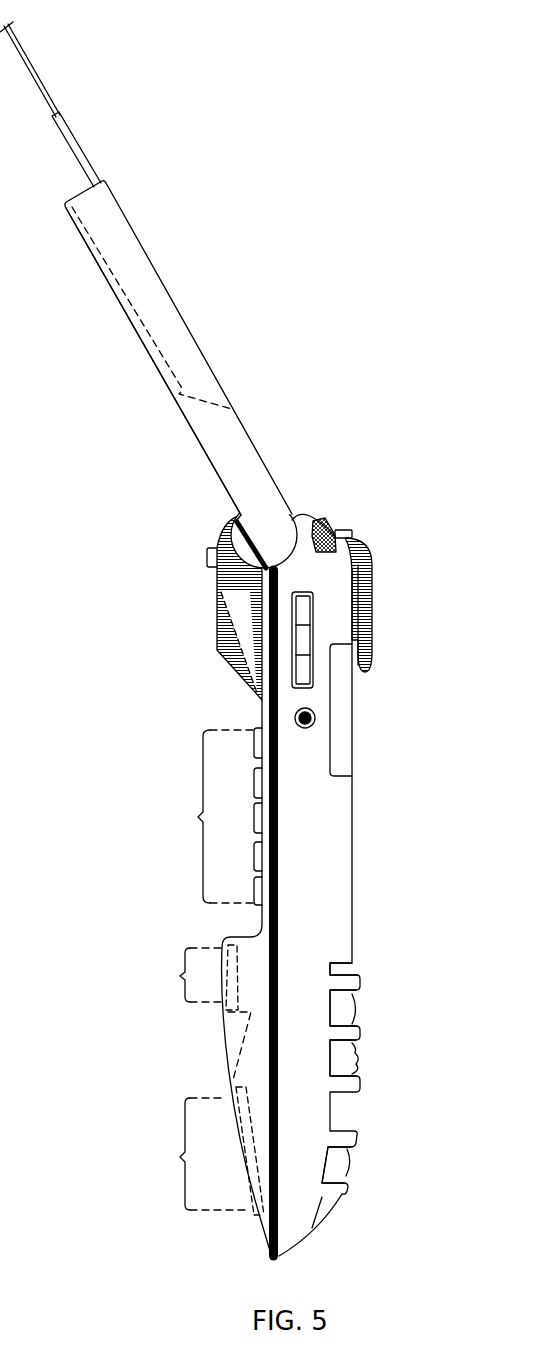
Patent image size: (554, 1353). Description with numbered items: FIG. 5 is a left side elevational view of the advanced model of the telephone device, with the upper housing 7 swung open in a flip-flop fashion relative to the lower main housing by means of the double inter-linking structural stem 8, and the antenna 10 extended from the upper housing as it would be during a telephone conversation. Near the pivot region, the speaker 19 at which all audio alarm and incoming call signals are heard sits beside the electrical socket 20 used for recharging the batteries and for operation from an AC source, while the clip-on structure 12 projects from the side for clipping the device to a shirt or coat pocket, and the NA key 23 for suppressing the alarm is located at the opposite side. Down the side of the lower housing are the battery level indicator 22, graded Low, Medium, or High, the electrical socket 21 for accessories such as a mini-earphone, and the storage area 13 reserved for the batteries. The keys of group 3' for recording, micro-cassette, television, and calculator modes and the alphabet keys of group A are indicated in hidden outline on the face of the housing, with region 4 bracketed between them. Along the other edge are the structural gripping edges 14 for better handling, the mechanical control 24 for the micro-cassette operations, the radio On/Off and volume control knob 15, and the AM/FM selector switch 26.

The antenna 10 is at (37, 75).
The upper housing 7 is at (151, 358).
The inter-linking stem 8 is at (246, 468).
The speaker 19 is at (320, 521).
The electrical socket 20 is at (343, 530).
The clip-on structure 12 is at (372, 572).
The NA (No-Alarm) key 23 is at (206, 557).
The battery level indicator 22 is at (304, 637).
The electrical socket 21 is at (295, 717).
The storage area for batteries 13 is at (345, 733).
The group of additional keys 3' is at (218, 816).
The battery compartment 4 is at (204, 1012).
The group of alphabet keys A is at (211, 1151).
The structural gripping edges 14 is at (356, 980).
The mechanical control 24 is at (359, 1009).
The On/Off and volume control knob 15 is at (360, 1058).
The AM/FM selector switch 26 is at (349, 1163).